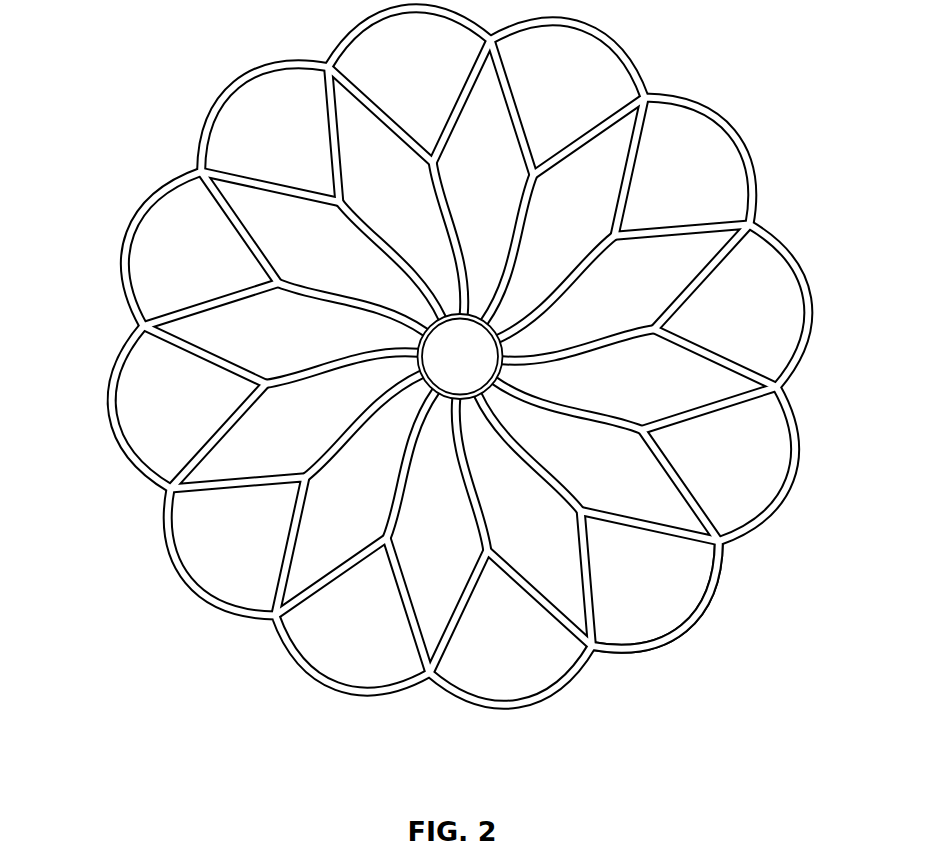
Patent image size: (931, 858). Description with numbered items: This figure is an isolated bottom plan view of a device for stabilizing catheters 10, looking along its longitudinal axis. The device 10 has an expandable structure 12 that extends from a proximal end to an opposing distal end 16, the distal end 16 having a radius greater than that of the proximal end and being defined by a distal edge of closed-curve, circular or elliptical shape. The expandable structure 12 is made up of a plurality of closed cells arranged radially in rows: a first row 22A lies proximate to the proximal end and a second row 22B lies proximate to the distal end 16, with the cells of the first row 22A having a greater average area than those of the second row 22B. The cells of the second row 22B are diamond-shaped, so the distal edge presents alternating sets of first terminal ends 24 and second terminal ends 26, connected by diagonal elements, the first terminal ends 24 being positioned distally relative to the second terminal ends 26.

The device for stabilizing catheters 10 is at (437, 356).
The expandable structure 12 is at (767, 203).
The distal end 16 is at (708, 651).
The first row 22A is at (223, 183).
The second row 22B is at (268, 107).
The first terminal ends 24 is at (108, 413).
The second terminal ends 26 is at (142, 322).